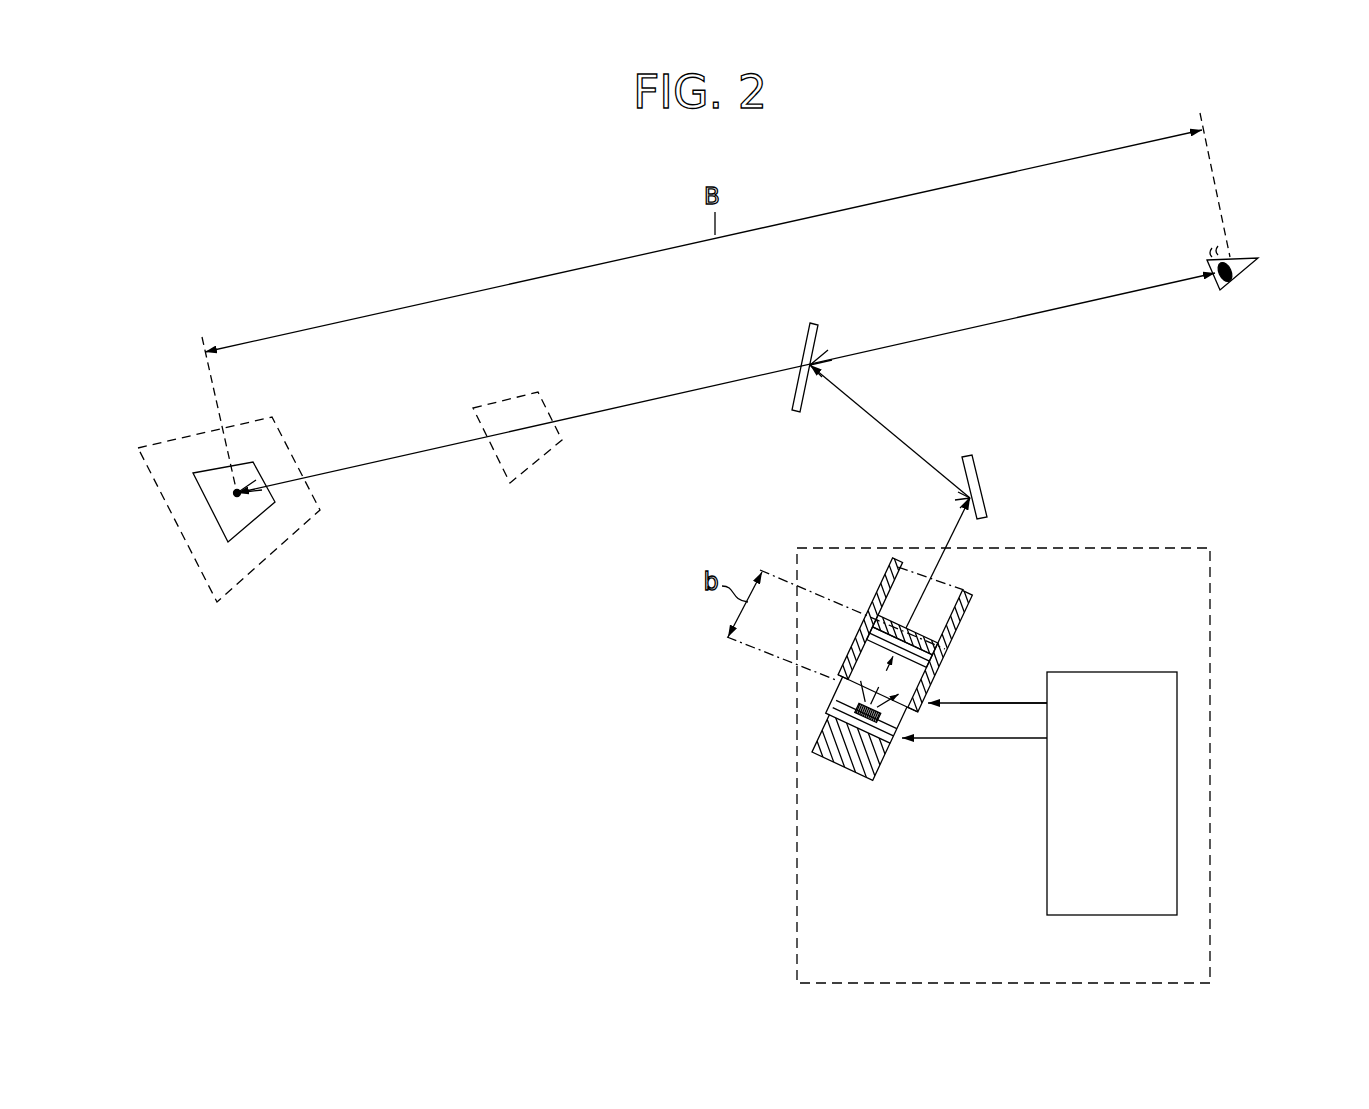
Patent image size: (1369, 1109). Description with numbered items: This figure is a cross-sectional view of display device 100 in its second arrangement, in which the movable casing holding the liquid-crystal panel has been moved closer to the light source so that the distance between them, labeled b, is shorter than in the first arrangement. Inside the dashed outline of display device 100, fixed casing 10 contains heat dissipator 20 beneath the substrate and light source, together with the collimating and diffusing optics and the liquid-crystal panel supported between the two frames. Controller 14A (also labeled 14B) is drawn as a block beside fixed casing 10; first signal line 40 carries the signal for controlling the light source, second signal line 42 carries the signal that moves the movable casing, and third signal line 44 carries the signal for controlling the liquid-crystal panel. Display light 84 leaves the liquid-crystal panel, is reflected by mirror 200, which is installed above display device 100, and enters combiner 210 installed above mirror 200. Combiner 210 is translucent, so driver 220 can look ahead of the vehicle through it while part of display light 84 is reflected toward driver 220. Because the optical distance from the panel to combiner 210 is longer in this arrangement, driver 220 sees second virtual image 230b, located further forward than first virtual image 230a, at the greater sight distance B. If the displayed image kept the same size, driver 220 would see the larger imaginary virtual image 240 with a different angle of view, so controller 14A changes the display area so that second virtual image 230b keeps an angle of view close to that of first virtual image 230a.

The fixed casing 10 is at (859, 668).
The controller 14A is at (1118, 769).
The controller 14B is at (1122, 671).
The heat dissipator 20 is at (845, 745).
The first signal line 40 is at (976, 741).
The second signal line 42 is at (1012, 706).
The third signal line 44 is at (1028, 700).
The display light 84 is at (905, 442).
The display device 100 is at (1216, 946).
The mirror 200 is at (980, 470).
The combiner 210 is at (815, 324).
The driver 220 is at (1246, 250).
The first virtual image 230a is at (515, 398).
The second virtual image 230b is at (205, 497).
The imaginary virtual image 240 is at (163, 438).